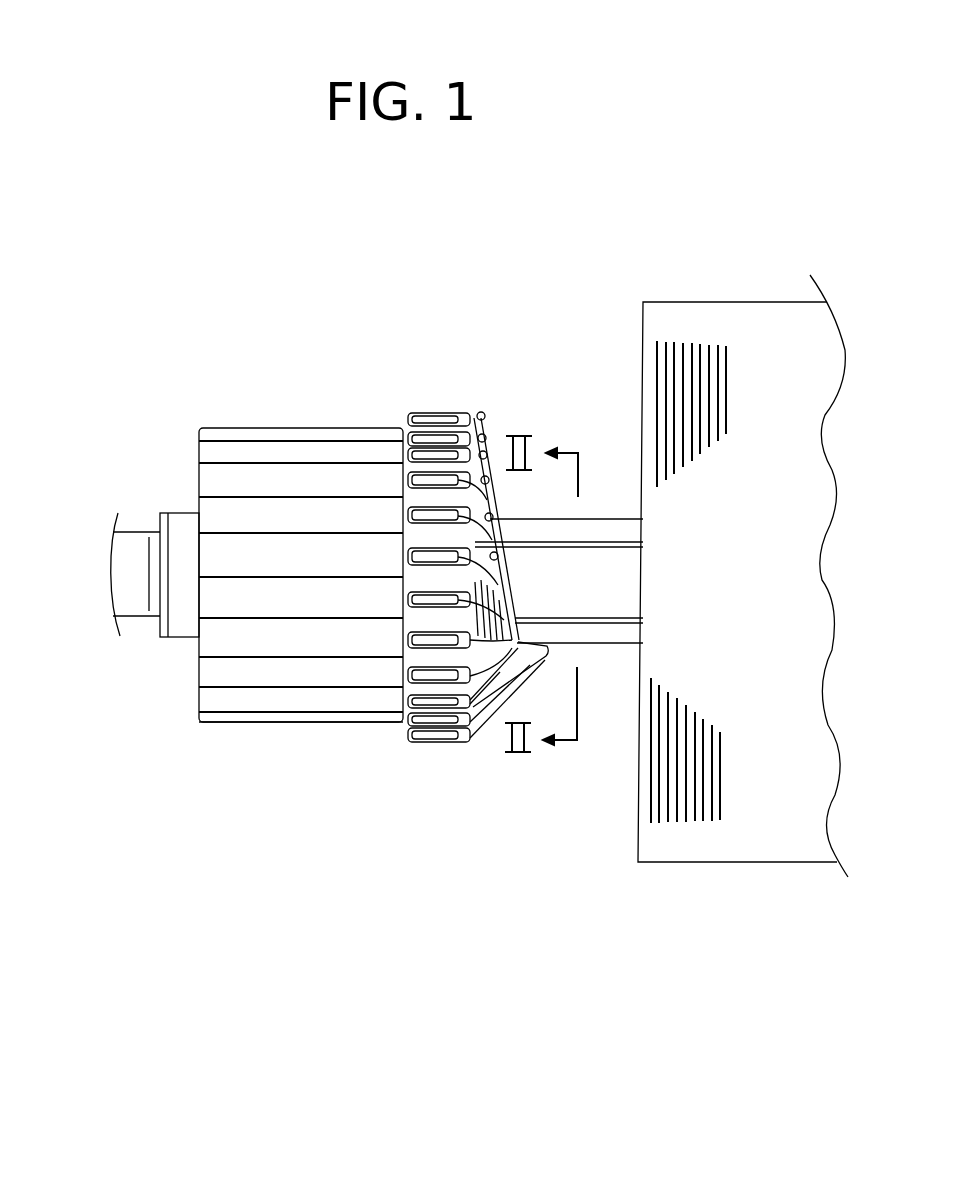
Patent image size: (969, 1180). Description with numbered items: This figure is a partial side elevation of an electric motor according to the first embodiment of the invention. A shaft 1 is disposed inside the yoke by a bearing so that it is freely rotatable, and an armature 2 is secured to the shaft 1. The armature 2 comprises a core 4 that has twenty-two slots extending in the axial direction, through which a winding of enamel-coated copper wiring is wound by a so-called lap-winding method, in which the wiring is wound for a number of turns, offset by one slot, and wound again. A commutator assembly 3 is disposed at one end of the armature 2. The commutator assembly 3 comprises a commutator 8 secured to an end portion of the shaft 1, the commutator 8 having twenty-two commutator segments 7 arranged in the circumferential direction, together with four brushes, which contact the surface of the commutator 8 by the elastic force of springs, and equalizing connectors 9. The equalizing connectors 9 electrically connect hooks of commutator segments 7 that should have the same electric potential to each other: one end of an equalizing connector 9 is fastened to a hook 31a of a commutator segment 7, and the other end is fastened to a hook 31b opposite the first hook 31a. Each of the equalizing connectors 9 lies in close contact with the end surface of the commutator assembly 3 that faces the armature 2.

The shaft 1 is at (621, 646).
The armature 2 is at (812, 845).
The commutator assembly 3 is at (305, 730).
The core 4 is at (735, 830).
The commutator segments 7 is at (281, 450).
The commutator 8 is at (250, 728).
The equalizing connectors 9 is at (483, 732).
The hook 31a is at (442, 418).
The hook 31b is at (440, 748).